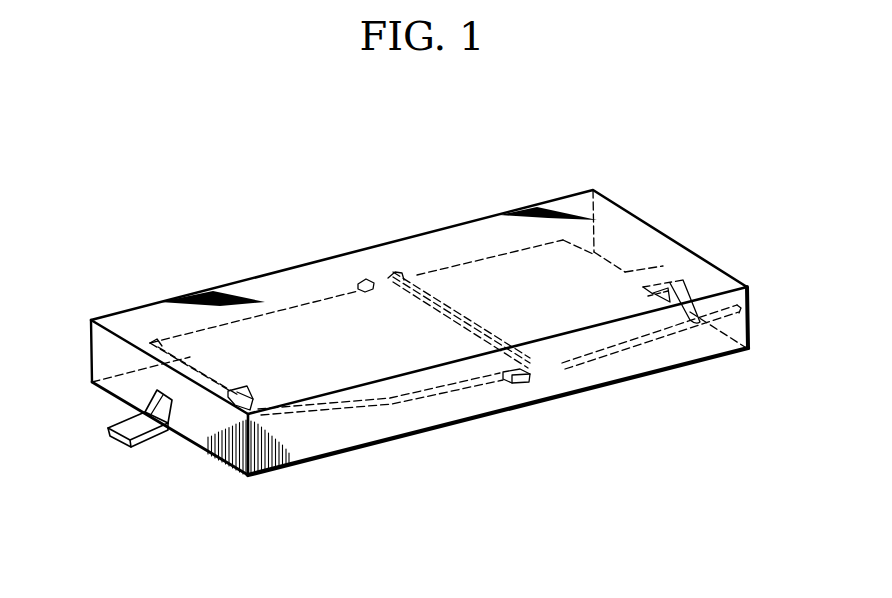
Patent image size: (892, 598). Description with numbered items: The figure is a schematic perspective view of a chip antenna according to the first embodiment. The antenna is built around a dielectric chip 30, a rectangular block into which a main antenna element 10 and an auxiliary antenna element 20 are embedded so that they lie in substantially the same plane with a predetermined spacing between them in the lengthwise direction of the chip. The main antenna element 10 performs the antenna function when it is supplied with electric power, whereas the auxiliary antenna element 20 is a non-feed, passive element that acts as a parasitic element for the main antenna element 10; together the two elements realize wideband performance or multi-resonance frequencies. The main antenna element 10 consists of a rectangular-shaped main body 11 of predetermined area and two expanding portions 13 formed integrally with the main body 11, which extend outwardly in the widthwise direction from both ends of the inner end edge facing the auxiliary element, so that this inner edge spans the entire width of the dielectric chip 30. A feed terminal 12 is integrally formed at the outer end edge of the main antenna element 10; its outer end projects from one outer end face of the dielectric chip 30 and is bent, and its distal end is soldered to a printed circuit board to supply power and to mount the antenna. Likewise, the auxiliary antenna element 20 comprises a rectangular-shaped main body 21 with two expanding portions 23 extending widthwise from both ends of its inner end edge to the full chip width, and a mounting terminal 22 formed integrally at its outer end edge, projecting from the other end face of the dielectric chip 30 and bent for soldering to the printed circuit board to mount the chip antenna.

The dielectric chip 30 is at (271, 233).
The main antenna element 10 is at (266, 340).
The auxiliary antenna element 20 is at (521, 279).
The main body 11 is at (390, 392).
The main body 21 is at (644, 347).
The expanding portions 13 is at (370, 282).
The expanding portions 23 is at (403, 272).
The mounting terminal 22 is at (662, 266).
The feed terminal 12 is at (160, 412).